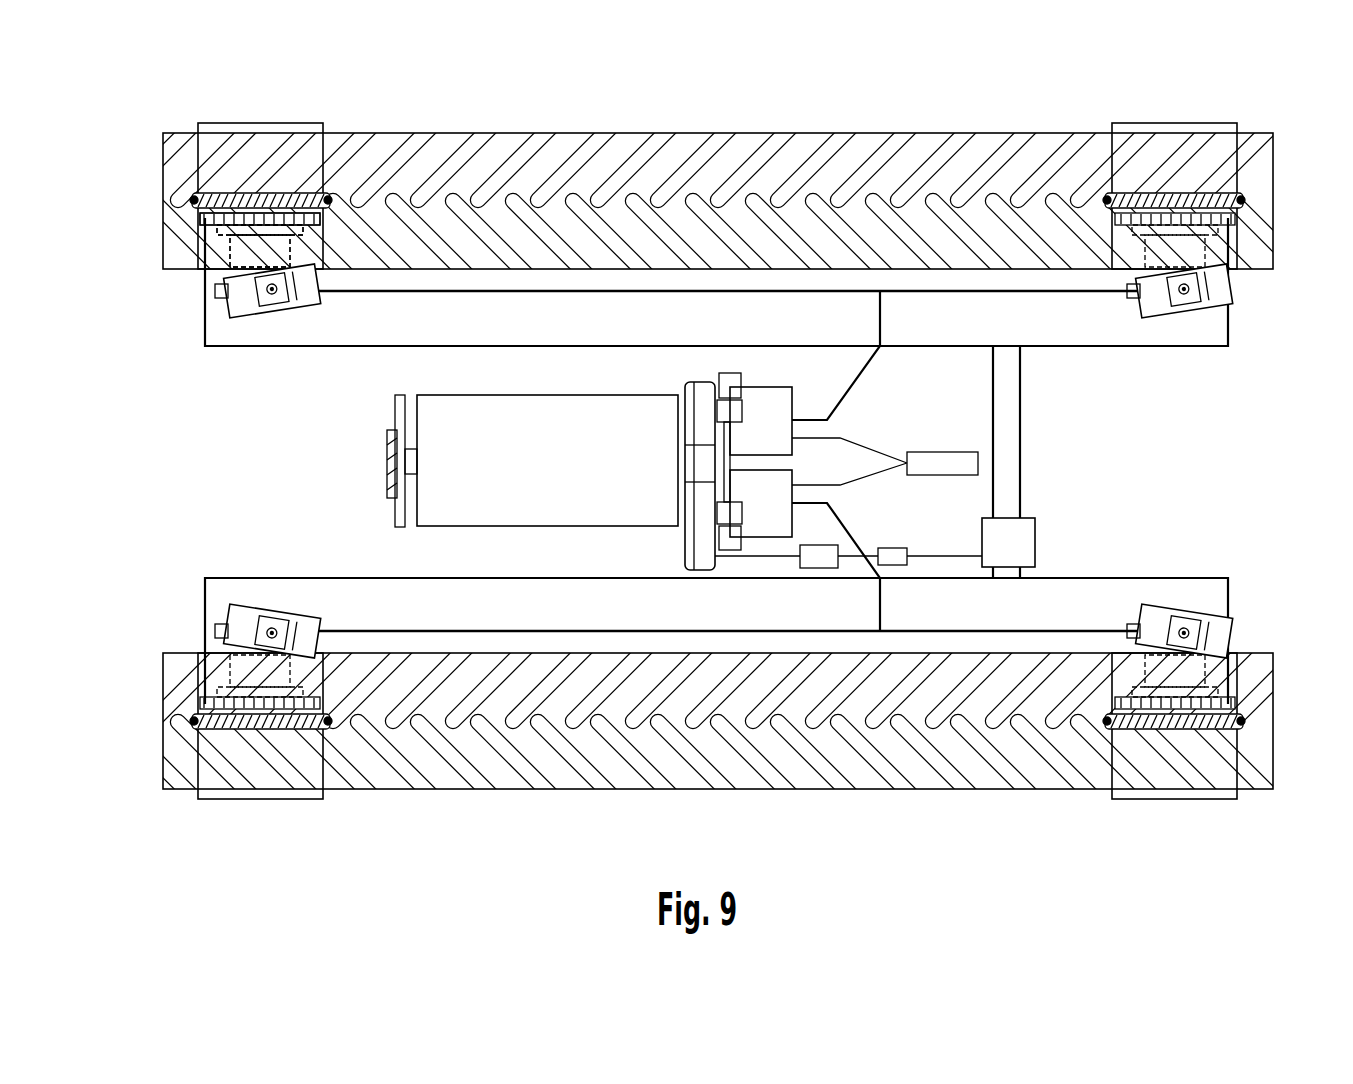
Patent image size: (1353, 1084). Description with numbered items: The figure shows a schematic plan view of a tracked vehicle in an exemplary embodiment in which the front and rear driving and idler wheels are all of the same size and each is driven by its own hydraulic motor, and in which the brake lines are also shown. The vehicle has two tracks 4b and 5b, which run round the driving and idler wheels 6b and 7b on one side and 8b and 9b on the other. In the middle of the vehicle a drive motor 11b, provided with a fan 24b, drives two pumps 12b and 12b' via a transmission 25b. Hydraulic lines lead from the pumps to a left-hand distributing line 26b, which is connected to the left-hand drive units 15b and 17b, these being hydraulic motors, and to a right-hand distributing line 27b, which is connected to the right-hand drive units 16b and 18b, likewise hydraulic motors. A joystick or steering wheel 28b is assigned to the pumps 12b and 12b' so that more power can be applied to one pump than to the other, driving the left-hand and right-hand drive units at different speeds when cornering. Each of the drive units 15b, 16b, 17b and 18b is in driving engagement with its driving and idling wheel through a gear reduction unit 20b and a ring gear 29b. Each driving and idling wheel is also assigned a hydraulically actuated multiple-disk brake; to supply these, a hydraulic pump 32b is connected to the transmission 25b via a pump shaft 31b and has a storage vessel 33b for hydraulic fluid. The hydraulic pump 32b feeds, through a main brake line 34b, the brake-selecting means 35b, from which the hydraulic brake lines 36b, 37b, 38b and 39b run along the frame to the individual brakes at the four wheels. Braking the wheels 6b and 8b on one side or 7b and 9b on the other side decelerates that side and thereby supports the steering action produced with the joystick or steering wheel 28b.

The track 4b is at (605, 760).
The track 5b is at (605, 165).
The driving and idler wheel 6b is at (198, 770).
The driving and idler wheel 7b is at (198, 150).
The driving and idler wheel 8b is at (1237, 770).
The driving and idler wheel 9b is at (1237, 153).
The drive motor 11b is at (455, 518).
The pump 12b is at (811, 503).
The pump 12b' is at (772, 378).
The drive unit 15b is at (240, 626).
The drive unit 16b is at (237, 296).
The drive unit 17b is at (1218, 640).
The drive unit 18b is at (1220, 298).
The gear reduction unit 20b is at (213, 232).
The fan 24b is at (392, 413).
The transmission 25b is at (697, 395).
The left-hand distributing line 26b is at (555, 630).
The right-hand distributing line 27b is at (497, 292).
The joystick or steering wheel 28b is at (970, 463).
The ring gear 29b is at (197, 205).
The pump shaft 31b is at (755, 560).
The hydraulic pump 32b is at (823, 570).
The storage vessel 33b is at (893, 567).
The main brake line 34b is at (958, 560).
The brake-selecting means 35b is at (1023, 542).
The hydraulic brake line 36b is at (242, 576).
The hydraulic brake line 37b is at (245, 347).
The hydraulic brake line 38b is at (1157, 578).
The hydraulic brake line 39b is at (1150, 347).